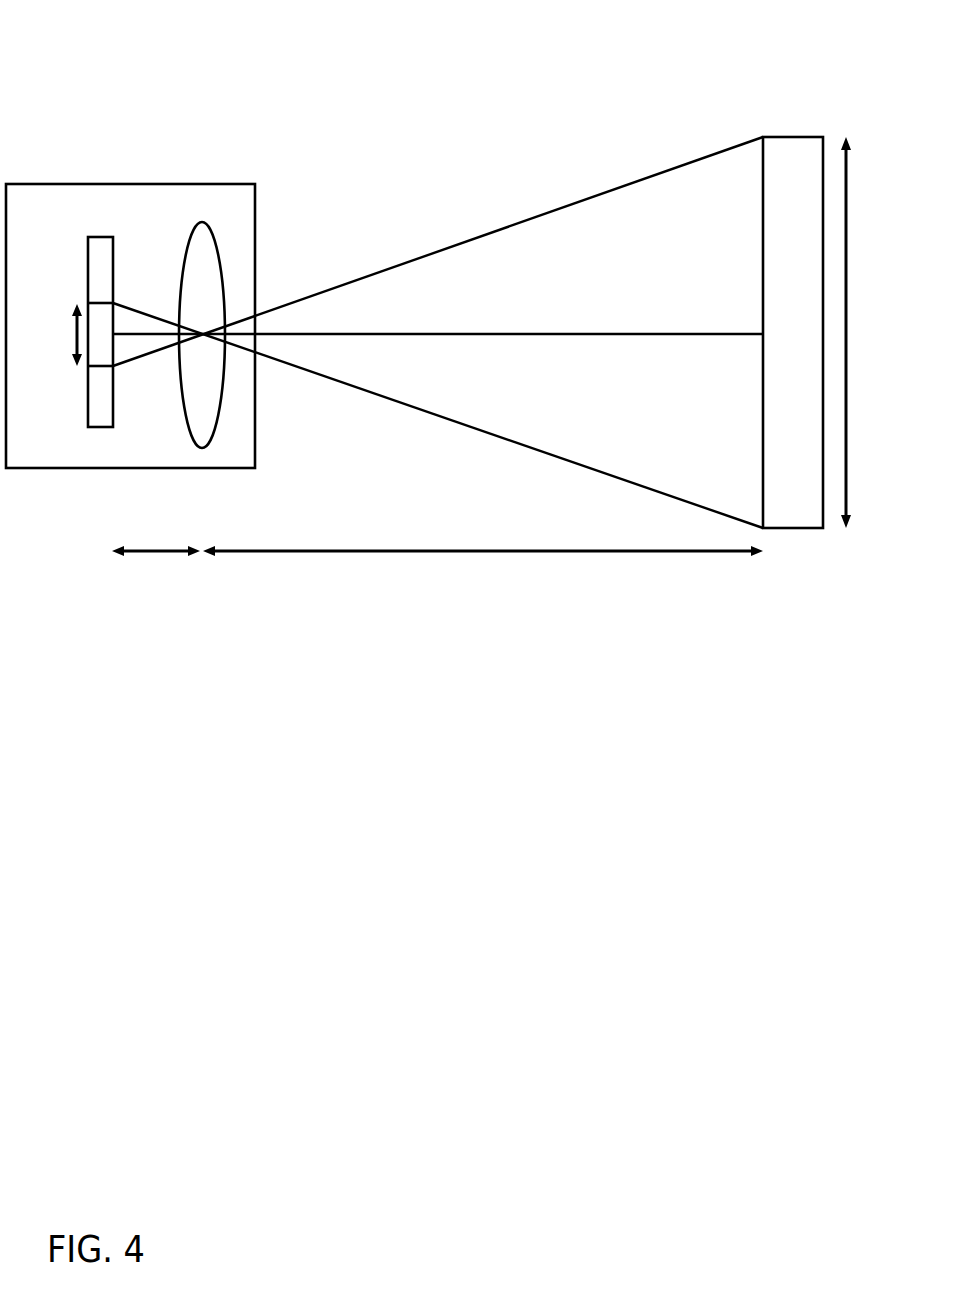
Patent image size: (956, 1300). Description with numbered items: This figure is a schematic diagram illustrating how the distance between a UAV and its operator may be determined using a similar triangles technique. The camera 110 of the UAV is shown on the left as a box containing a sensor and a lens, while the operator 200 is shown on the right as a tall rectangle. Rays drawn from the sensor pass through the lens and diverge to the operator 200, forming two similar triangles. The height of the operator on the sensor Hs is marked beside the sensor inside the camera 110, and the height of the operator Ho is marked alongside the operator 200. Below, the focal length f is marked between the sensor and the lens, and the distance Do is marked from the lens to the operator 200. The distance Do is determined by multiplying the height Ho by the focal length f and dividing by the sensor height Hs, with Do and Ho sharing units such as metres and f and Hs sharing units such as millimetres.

The camera 110 is at (384, 300).
The operator 200 is at (826, 265).
The height of the operator on the sensor Hs is at (52, 335).
The height of the operator Ho is at (865, 332).
The focal length of the camera f is at (156, 531).
The distance between the UAV and the operator Do is at (483, 529).